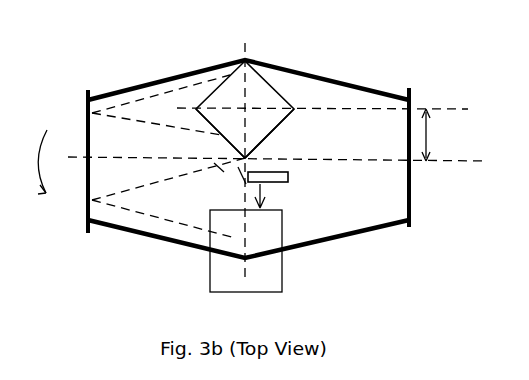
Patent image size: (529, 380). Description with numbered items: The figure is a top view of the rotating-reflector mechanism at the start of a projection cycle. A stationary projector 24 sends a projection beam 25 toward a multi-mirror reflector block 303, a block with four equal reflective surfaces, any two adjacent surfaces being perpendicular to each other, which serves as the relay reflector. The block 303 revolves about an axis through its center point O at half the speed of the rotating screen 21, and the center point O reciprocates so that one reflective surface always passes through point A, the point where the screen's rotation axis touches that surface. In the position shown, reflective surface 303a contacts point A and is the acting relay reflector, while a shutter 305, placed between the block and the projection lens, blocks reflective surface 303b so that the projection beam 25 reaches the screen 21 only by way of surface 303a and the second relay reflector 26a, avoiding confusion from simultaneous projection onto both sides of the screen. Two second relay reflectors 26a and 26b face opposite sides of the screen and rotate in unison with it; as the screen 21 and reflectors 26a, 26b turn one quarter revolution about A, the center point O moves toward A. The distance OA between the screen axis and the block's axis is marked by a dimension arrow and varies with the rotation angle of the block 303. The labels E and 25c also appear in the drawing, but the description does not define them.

The rotating screen 21 is at (240, 87).
The stationary projector 24 is at (277, 275).
The projection beam 25 is at (238, 187).
The light beam edge ray 25c is at (158, 212).
The second relay reflector 26a is at (85, 178).
The second relay reflector 26b is at (413, 193).
The multi-mirror reflector block 303 is at (262, 83).
The reflective surface 303a is at (203, 118).
The reflective surface 303b is at (264, 137).
The shutter 305 is at (290, 181).
The edge E is at (193, 103).
The center point O is at (248, 108).
The point A is at (250, 158).
The distance OA is at (432, 135).